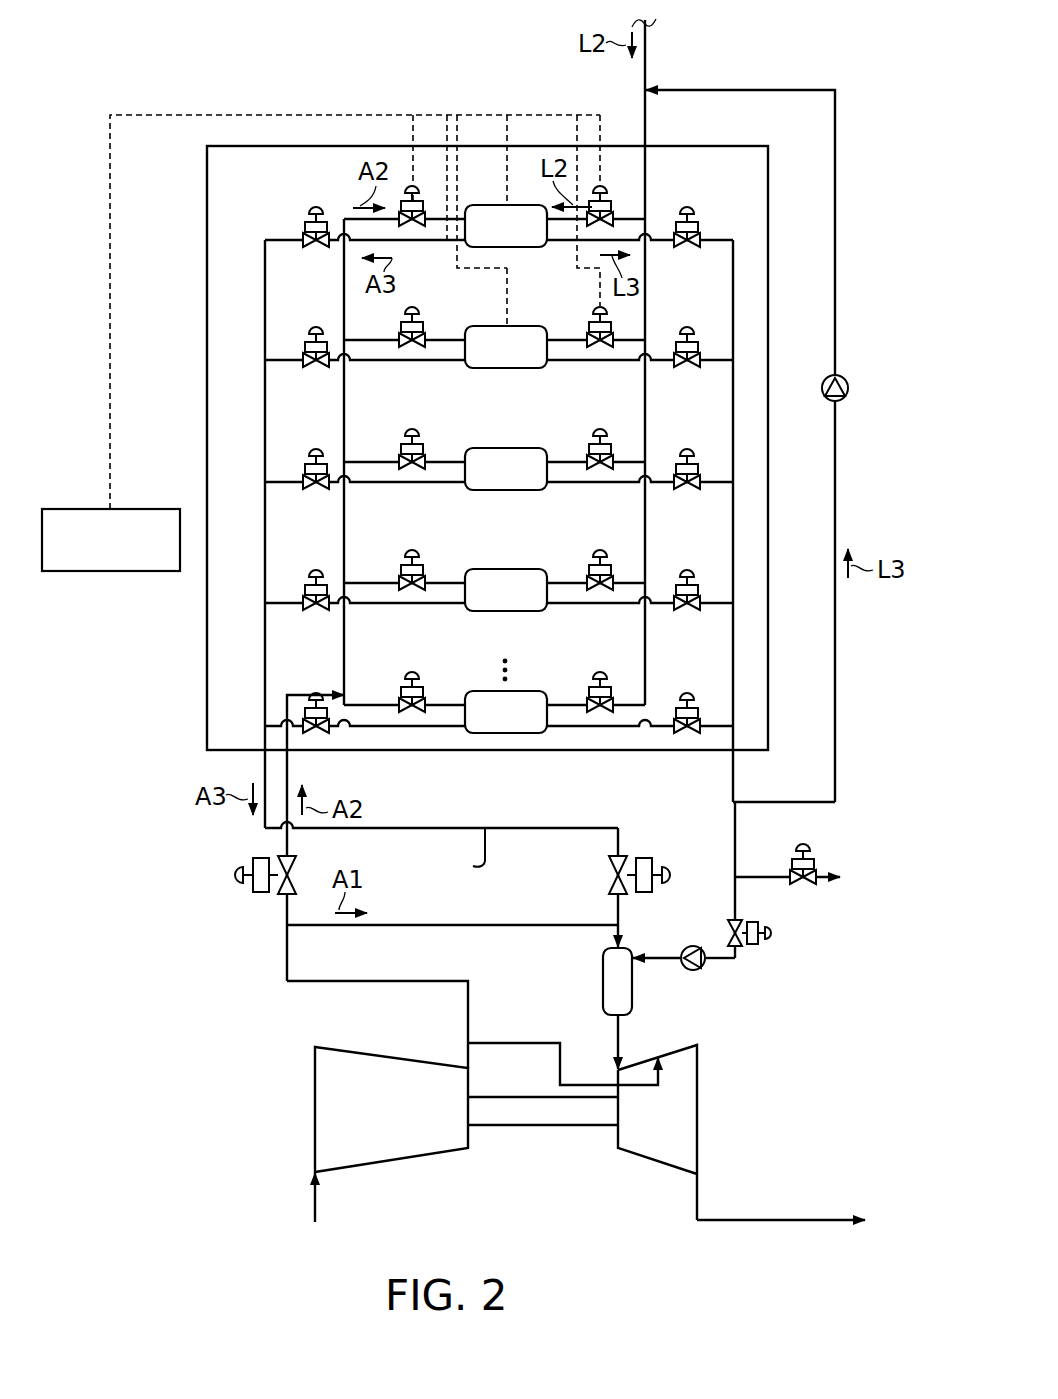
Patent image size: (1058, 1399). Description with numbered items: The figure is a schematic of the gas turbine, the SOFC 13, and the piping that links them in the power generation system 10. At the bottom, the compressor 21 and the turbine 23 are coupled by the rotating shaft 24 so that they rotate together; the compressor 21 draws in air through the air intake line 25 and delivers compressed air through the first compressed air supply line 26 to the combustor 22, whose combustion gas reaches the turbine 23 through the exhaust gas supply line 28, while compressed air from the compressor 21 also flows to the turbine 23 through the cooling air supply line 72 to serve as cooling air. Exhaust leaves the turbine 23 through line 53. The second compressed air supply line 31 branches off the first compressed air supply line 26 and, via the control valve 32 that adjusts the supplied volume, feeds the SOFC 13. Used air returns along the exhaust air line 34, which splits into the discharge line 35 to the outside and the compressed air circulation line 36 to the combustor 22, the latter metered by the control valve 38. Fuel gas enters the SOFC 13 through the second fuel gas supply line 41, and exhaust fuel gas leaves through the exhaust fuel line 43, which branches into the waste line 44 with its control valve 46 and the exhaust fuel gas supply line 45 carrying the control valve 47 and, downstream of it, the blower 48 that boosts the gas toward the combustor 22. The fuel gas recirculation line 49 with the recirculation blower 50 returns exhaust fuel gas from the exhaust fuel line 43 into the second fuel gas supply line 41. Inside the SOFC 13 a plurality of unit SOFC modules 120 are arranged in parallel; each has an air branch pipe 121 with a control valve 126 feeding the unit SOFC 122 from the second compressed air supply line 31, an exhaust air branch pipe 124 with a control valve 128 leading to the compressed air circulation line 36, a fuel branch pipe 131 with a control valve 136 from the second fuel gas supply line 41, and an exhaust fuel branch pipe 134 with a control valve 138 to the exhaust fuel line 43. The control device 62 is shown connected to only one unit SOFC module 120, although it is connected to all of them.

The power generation system 10 is at (182, 72).
The SOFC 13 is at (328, 143).
The compressor 21 is at (389, 1161).
The combustor 22 is at (632, 993).
The turbine 23 is at (656, 1161).
The rotating shaft 24 is at (527, 1126).
The air intake line 25 is at (313, 1202).
The first compressed air supply line 26 is at (336, 928).
The exhaust gas supply line 28 is at (621, 1028).
The second compressed air supply line 31 is at (285, 921).
The control valve 32 is at (232, 877).
The exhaust air line 34 is at (455, 828).
The discharge line 35 is at (488, 848).
The compressed air circulation line 36 is at (570, 830).
The control valve 38 is at (674, 867).
The second fuel gas supply line 41 is at (649, 44).
The exhaust fuel line 43 is at (736, 768).
The waste line 44 is at (758, 873).
The exhaust fuel gas supply line 45 is at (736, 898).
The control valve 46 is at (808, 836).
The control valve 47 is at (775, 935).
The blower 48 is at (694, 945).
The fuel gas recirculation line 49 is at (836, 308).
The recirculation blower 50 is at (848, 392).
The exhaust line 53 is at (699, 1190).
The control device 62 is at (66, 509).
The cooling air supply line 72 is at (514, 1043).
The unit SOFC module 120 is at (453, 441).
The air branch pipe 121 is at (343, 234).
The unit SOFC 122 is at (490, 205).
The exhaust air branch pipe 124 is at (264, 334).
The control valve 126 is at (412, 185).
The control valve 128 is at (314, 221).
The fuel branch pipe 131 is at (615, 210).
The exhaust fuel branch pipe 134 is at (729, 240).
The control valve 136 is at (597, 186).
The control valve 138 is at (687, 205).